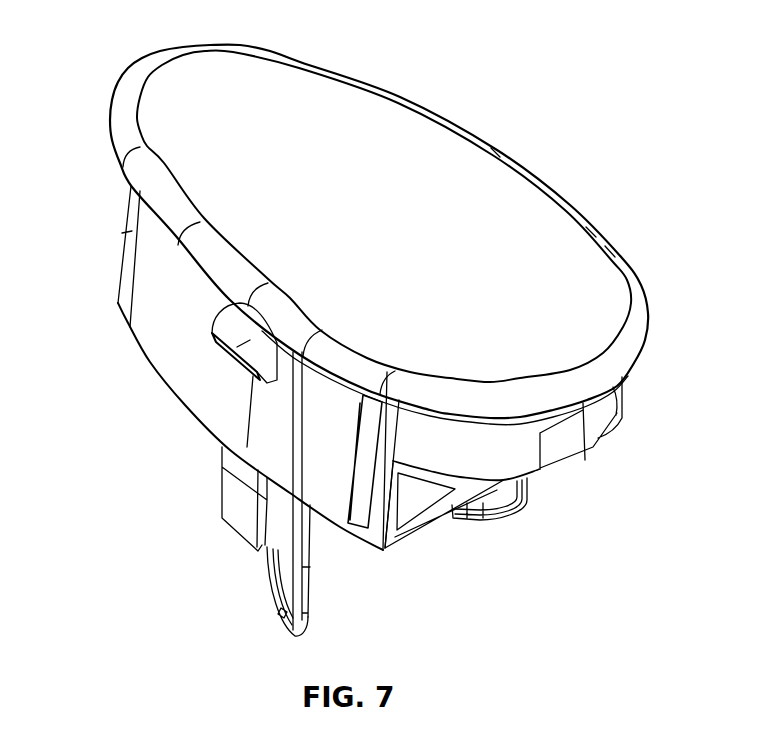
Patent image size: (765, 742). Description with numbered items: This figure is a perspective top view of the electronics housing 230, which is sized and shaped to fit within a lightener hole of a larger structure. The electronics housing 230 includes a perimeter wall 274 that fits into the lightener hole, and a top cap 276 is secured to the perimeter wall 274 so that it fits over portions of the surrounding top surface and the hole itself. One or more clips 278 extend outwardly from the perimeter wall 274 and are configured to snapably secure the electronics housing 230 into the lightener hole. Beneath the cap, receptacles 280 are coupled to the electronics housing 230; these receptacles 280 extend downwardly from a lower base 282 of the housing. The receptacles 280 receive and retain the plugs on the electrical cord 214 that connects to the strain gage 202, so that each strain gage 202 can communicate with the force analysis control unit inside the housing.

The electronics housing 230 is at (397, 158).
The top cap 276 is at (513, 213).
The perimeter wall 274 is at (130, 233).
The clips 278 is at (240, 345).
The strain gage 202 is at (257, 388).
The electrical cord 214 is at (293, 450).
The receptacles 280 is at (235, 512).
The lower base 282 is at (337, 528).